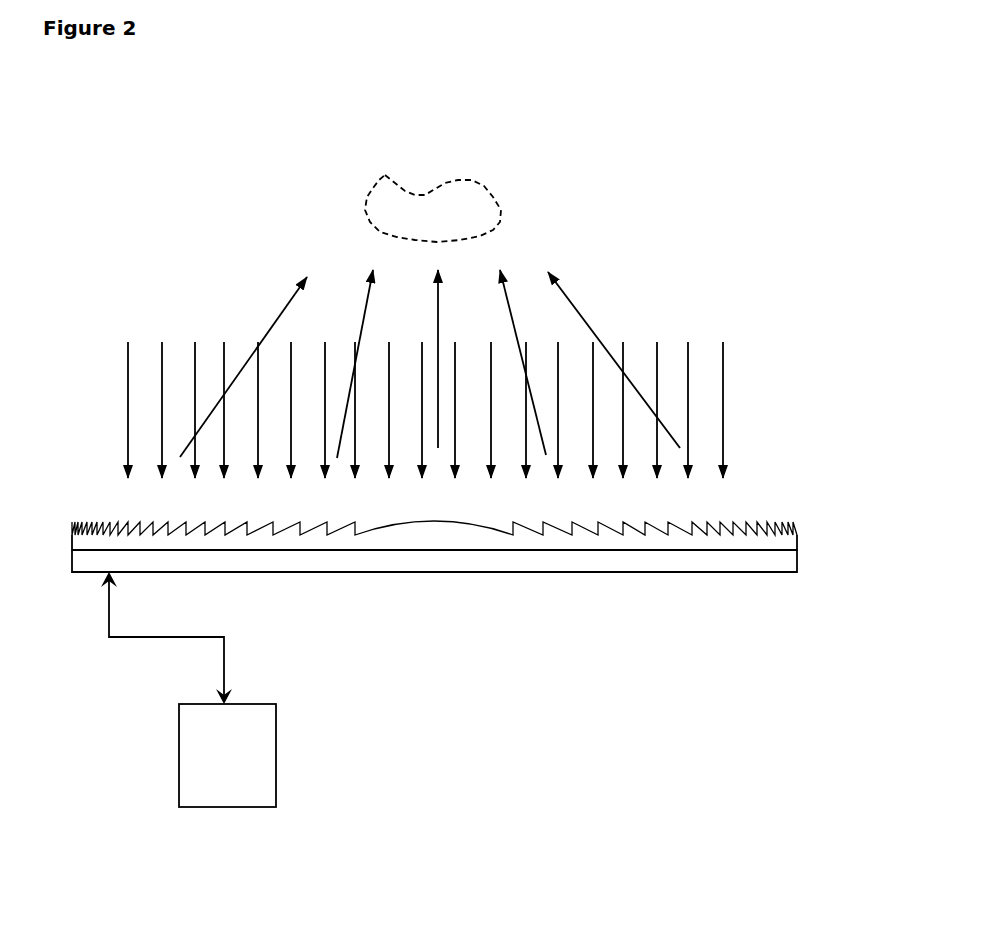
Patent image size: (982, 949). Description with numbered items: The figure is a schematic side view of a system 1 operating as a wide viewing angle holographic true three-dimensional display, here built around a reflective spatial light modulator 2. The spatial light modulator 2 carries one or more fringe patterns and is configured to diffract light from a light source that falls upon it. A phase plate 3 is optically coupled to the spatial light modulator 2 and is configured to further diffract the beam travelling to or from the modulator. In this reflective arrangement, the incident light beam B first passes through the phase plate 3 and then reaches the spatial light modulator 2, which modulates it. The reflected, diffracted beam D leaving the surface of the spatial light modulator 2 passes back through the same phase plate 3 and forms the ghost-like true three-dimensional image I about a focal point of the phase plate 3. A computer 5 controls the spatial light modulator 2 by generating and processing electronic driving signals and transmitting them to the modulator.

The system 1 is at (297, 168).
The true 3D image I is at (492, 194).
The diffracted beam D is at (582, 308).
The incident beam B is at (725, 402).
The phase plate 3 is at (790, 542).
The spatial light modulator 2 is at (790, 561).
The computer 5 is at (277, 771).